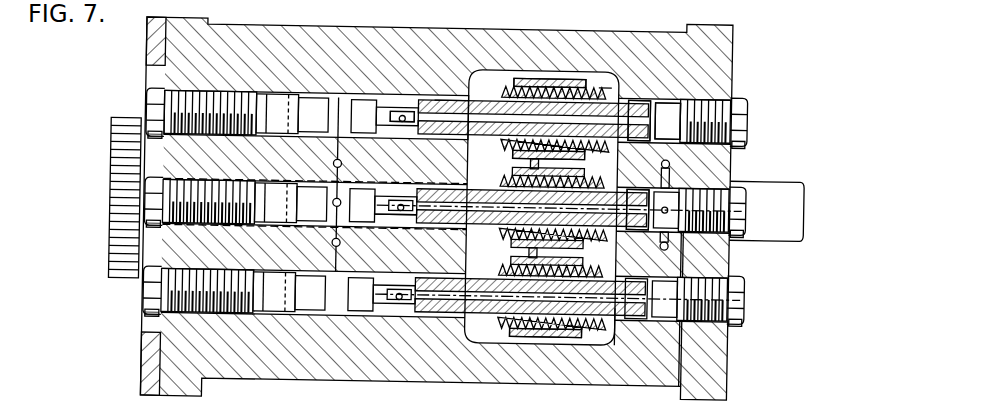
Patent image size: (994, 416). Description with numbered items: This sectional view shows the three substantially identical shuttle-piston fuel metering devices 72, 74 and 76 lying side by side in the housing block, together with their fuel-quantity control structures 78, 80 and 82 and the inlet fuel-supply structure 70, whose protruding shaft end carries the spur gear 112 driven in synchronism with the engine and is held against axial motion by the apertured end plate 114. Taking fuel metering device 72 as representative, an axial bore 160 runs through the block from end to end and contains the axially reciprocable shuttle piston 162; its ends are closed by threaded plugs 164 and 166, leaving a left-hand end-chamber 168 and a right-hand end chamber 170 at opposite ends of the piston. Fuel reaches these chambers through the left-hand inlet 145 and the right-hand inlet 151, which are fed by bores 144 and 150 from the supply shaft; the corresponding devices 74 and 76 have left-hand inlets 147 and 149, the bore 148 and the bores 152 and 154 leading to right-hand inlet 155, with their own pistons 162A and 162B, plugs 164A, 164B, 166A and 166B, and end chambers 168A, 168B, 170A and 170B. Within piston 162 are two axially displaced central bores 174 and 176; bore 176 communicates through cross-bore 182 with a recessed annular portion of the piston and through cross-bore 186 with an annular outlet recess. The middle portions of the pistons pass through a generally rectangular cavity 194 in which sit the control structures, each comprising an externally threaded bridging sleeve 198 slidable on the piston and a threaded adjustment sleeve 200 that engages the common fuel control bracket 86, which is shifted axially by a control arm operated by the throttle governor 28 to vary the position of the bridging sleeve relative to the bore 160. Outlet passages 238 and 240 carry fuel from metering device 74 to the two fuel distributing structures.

The throttle governor 28 is at (239, 22).
The axial bore 160 is at (340, 45).
The apertured end plate 114 is at (150, 360).
The spur gear 112 is at (112, 150).
The threaded adjustment sleeve 200 is at (520, 62).
The threaded plug 164 is at (180, 106).
The threaded plug 164A is at (118, 206).
The threaded plug 164B is at (185, 292).
The left-hand end-chamber 168 is at (360, 108).
The left-hand end-chamber 168A is at (430, 182).
The left-hand end-chamber 168B is at (372, 293).
The cross-bore 186 is at (414, 110).
The outlet passage 238 is at (368, 178).
The outlet passage 240 is at (430, 213).
The shuttle piston 162 is at (488, 90).
The shuttle piston 162A is at (633, 183).
The shuttle piston 162B is at (490, 301).
The axial bore 176 is at (456, 92).
The axial bore 174 is at (640, 90).
The shuttle-piston fuel metering device 74 is at (643, 217).
The fuel-quantity control structure 78 is at (556, 88).
The fuel-quantity control structure 80 is at (514, 166).
The fuel-quantity control structure 82 is at (560, 333).
The cross-bore 182 is at (547, 72).
The bridging sleeve 198 is at (514, 134).
The cavity 194 is at (527, 333).
The fuel control bracket 86 is at (518, 242).
The right-hand end chamber 170 is at (580, 85).
The shuttle-piston fuel metering device 72 is at (668, 92).
The threaded plug 166 is at (750, 89).
The threaded plug 166A is at (748, 201).
The threaded plug 166B is at (750, 290).
The left-hand inlet 145 is at (336, 134).
The bore 144 is at (336, 158).
The left-hand inlet 147 is at (337, 233).
The left-hand inlet 149 is at (337, 249).
The bore 148 is at (345, 237).
The right-hand inlet 151 is at (663, 148).
The bore 150 is at (671, 148).
The bore 152 is at (671, 164).
The bore 154 is at (671, 241).
The right-hand inlet 155 is at (671, 256).
The inlet fuel-supply structure 70 is at (810, 172).
The right-hand end chamber 170A is at (730, 228).
The right-hand end chamber 170B is at (673, 310).
The shuttle-piston fuel metering device 76 is at (643, 314).